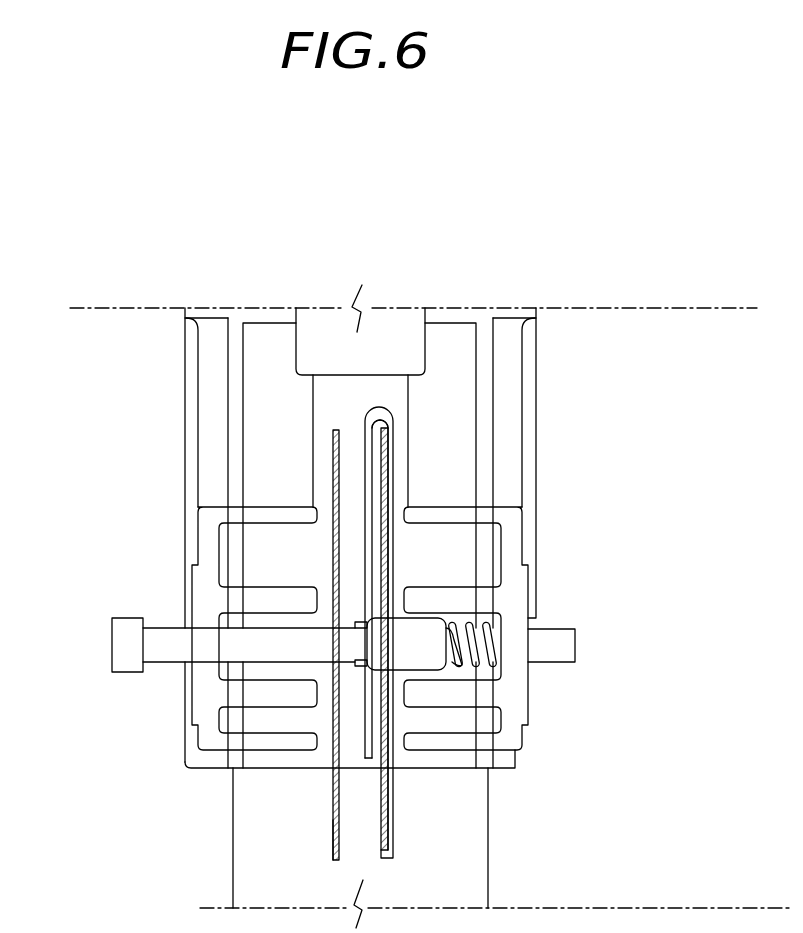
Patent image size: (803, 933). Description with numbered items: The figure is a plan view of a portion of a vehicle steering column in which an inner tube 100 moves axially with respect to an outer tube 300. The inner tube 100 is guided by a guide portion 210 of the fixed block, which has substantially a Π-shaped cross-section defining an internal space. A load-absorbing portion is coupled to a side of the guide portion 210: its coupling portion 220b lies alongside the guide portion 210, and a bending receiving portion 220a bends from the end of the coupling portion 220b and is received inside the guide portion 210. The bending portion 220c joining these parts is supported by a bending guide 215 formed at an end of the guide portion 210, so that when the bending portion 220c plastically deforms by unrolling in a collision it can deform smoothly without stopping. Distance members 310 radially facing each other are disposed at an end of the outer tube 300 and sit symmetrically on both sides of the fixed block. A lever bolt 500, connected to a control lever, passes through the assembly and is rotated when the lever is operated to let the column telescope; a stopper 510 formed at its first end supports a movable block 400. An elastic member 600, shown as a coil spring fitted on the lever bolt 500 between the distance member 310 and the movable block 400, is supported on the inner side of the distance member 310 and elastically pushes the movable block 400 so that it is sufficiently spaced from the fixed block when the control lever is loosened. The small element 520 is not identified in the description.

The inner tube 100 is at (480, 870).
The guide portion 210 is at (333, 827).
The bending guide 215 is at (383, 413).
The bending receiving portion 220a is at (370, 733).
The coupling portion 220b is at (393, 795).
The bending portion 220c is at (377, 412).
The outer tube 300 is at (503, 425).
The distance member 310 is at (510, 595).
The movable block 400 is at (423, 662).
The lever bolt 500 is at (155, 637).
The stopper 510 is at (125, 633).
The guide pin 520 is at (358, 622).
The elastic member 600 is at (493, 647).